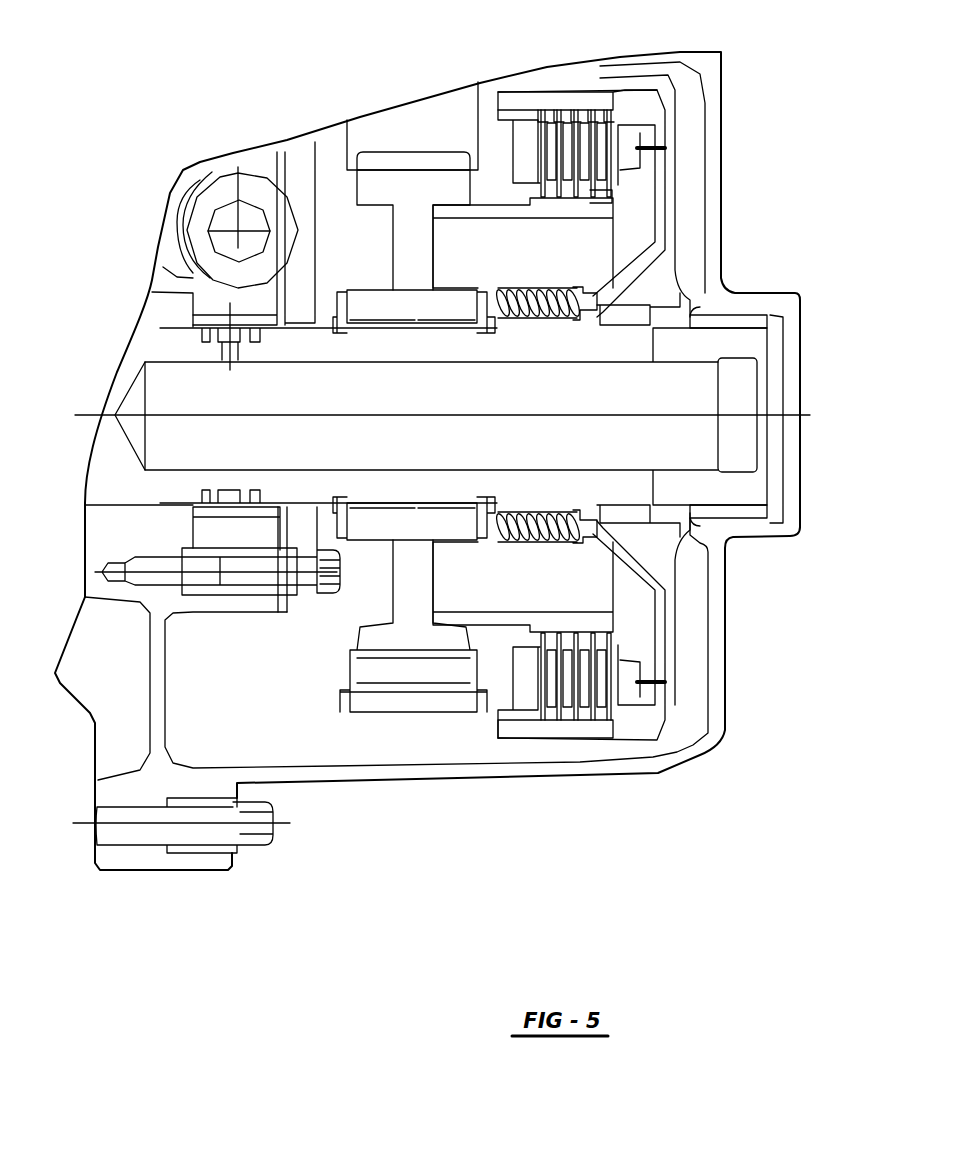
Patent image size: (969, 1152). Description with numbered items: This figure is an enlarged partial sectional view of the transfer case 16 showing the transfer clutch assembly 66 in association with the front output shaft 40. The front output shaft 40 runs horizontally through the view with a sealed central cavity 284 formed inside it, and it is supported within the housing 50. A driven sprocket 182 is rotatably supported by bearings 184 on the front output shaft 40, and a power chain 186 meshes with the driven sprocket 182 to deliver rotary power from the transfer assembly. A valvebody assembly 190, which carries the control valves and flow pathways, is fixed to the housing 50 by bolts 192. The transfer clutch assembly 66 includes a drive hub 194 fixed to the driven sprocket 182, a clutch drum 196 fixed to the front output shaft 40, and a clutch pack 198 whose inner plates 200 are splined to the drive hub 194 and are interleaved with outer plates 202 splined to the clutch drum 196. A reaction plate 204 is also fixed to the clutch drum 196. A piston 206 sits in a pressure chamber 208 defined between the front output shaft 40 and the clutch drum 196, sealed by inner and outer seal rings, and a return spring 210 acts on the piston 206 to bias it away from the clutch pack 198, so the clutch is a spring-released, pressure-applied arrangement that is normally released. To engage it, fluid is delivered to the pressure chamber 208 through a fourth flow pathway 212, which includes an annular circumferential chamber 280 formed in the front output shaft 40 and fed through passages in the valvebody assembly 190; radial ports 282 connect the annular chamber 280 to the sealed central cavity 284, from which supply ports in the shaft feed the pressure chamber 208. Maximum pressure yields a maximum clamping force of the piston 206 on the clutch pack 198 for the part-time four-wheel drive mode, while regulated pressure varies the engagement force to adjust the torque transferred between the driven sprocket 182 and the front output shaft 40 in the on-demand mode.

The transfer case 16 is at (752, 150).
The front output shaft 40 is at (118, 367).
The housing 50 is at (783, 535).
The transfer clutch assembly 66 is at (585, 78).
The driven sprocket 182 is at (400, 240).
The bearings 184 is at (440, 320).
The power chain 186 is at (410, 705).
The valvebody assembly 190 is at (300, 150).
The bolts 192 is at (235, 577).
The drive hub 194 is at (465, 212).
The clutch drum 196 is at (680, 270).
The clutch pack 198 is at (612, 115).
The inner plates 200 is at (562, 195).
The outer plates 202 is at (567, 723).
The reaction plate 204 is at (527, 148).
The piston 206 is at (633, 565).
The pressure chamber 208 is at (648, 285).
The return spring 210 is at (533, 317).
The fourth flow pathway 212 is at (160, 398).
The annular circumferential chamber 280 is at (228, 498).
The radial ports 282 is at (237, 352).
The sealed central cavity 284 is at (472, 451).